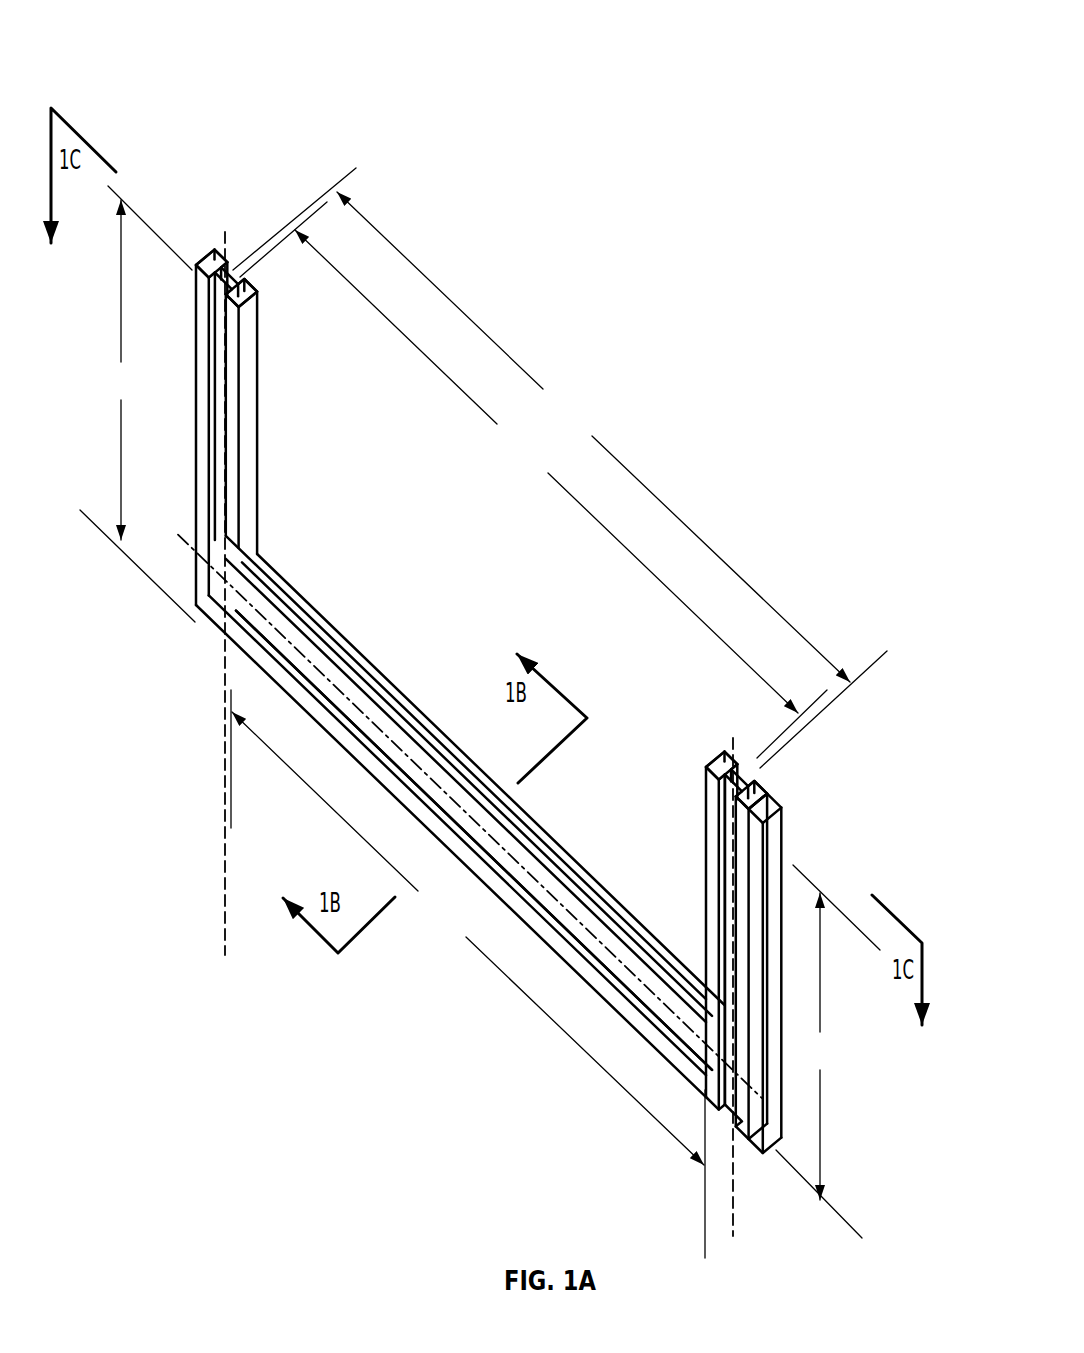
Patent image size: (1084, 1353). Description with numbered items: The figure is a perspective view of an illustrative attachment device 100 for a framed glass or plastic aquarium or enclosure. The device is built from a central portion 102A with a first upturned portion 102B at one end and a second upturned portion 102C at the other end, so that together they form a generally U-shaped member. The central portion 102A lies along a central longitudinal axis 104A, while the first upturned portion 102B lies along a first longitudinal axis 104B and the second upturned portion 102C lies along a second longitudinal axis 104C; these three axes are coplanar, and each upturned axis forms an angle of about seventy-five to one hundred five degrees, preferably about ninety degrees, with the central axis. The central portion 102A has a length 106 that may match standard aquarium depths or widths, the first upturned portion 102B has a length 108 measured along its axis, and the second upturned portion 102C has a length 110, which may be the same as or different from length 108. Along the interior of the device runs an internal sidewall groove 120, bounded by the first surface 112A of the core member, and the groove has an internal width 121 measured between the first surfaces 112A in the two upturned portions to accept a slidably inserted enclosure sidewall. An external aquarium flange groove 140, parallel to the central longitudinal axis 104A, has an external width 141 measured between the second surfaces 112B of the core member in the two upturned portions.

The attachment device 100 is at (878, 38).
The central portion 102A is at (520, 913).
The first upturned portion 102B is at (194, 377).
The second upturned portion 102C is at (712, 912).
The central longitudinal axis 104A is at (175, 522).
The first longitudinal axis 104B is at (226, 903).
The second longitudinal axis 104C is at (731, 1232).
The length of the central portion 106 is at (468, 974).
The length of the first upturned portion 108 is at (137, 404).
The length of the second upturned portion 110 is at (828, 1051).
The first surface of the core member 112A is at (240, 272).
The second surface of the core member 112B is at (211, 287).
The sidewall groove 120 is at (247, 376).
The internal width 121 is at (533, 480).
The aquarium flange groove 140 is at (784, 801).
The external width 141 is at (560, 468).